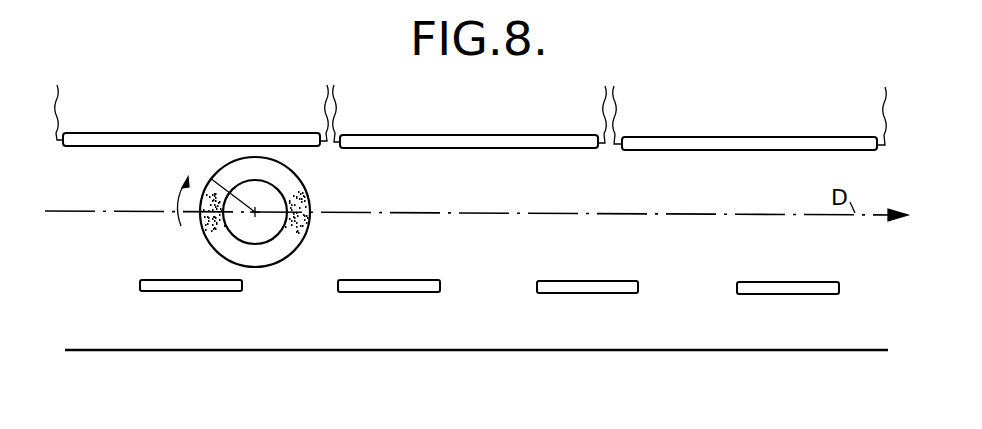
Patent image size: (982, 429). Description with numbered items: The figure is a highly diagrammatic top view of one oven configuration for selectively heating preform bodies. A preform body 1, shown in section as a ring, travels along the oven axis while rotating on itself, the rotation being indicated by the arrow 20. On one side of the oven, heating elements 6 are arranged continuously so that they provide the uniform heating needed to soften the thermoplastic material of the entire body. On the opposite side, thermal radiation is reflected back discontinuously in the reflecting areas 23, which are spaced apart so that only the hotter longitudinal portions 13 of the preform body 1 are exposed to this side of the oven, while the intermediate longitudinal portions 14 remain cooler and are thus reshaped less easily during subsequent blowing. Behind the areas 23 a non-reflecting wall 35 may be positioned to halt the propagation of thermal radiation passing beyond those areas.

The preform body 1 is at (309, 243).
The heating elements 6 is at (160, 135).
The hotter longitudinal portions 13 is at (307, 198).
The cooler longitudinal portions 14 is at (272, 257).
The arrow 20 is at (180, 197).
The reflecting areas 23 is at (180, 287).
The non-reflecting wall 35 is at (92, 348).